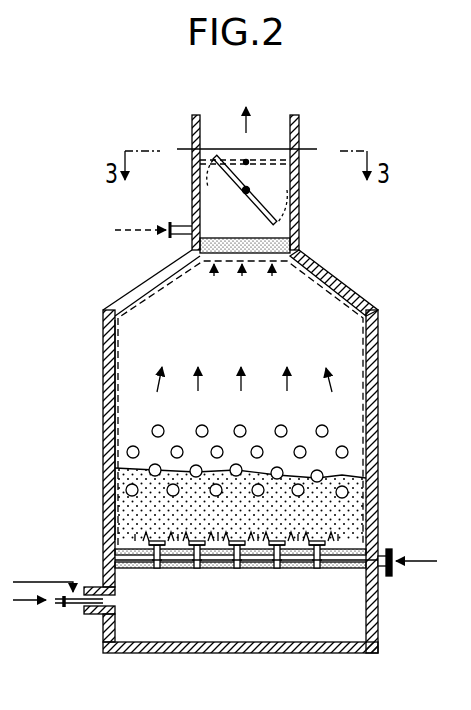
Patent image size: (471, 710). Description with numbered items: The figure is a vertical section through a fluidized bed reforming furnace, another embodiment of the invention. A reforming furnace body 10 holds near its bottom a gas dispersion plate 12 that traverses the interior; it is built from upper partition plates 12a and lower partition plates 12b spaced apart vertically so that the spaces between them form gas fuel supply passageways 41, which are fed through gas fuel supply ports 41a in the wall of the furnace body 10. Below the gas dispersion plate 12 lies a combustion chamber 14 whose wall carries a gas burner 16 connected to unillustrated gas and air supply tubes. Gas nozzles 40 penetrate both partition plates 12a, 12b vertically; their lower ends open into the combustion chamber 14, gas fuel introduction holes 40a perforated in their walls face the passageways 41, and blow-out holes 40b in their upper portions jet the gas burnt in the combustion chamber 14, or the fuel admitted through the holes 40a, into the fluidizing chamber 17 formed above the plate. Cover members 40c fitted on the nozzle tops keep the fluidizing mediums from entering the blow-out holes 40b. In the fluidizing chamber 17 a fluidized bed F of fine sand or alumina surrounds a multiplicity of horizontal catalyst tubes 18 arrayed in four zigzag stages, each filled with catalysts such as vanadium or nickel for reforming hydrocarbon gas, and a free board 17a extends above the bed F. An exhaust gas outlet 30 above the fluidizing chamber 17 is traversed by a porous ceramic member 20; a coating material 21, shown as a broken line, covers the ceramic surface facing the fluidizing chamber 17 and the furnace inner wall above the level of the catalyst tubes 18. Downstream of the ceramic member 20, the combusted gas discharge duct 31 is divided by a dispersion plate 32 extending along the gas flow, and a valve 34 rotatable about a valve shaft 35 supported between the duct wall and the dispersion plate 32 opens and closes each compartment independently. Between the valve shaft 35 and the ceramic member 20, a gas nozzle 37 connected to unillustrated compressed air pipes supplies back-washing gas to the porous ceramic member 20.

The reforming furnace body 10 is at (379, 340).
The gas dispersion plate 12 is at (270, 575).
The upper partition plate 12a is at (345, 549).
The lower partition plate 12b is at (307, 572).
The combustion chamber 14 is at (248, 618).
The gas burner 16 is at (77, 614).
The fluidizing chamber 17 is at (310, 406).
The free board 17a is at (140, 366).
The catalyst tube 18 is at (127, 449).
The porous ceramic member 20 is at (287, 246).
The coating material 21 is at (153, 286).
The exhaust gas outlet 30 is at (257, 266).
The combusted gas discharge duct 31 is at (299, 206).
The dispersion plate 32 is at (277, 177).
The valve 34 is at (273, 152).
The valve shaft 35 is at (243, 191).
The gas nozzle 37 is at (181, 224).
The gas nozzle 40 is at (156, 568).
The gas fuel introduction hole 40a is at (204, 562).
The blow-out hole 40b is at (148, 542).
The cover member 40c is at (152, 540).
The gas fuel supply passageway 41 is at (258, 562).
The gas fuel supply port 41a is at (388, 578).
The fluidized bed F is at (352, 505).